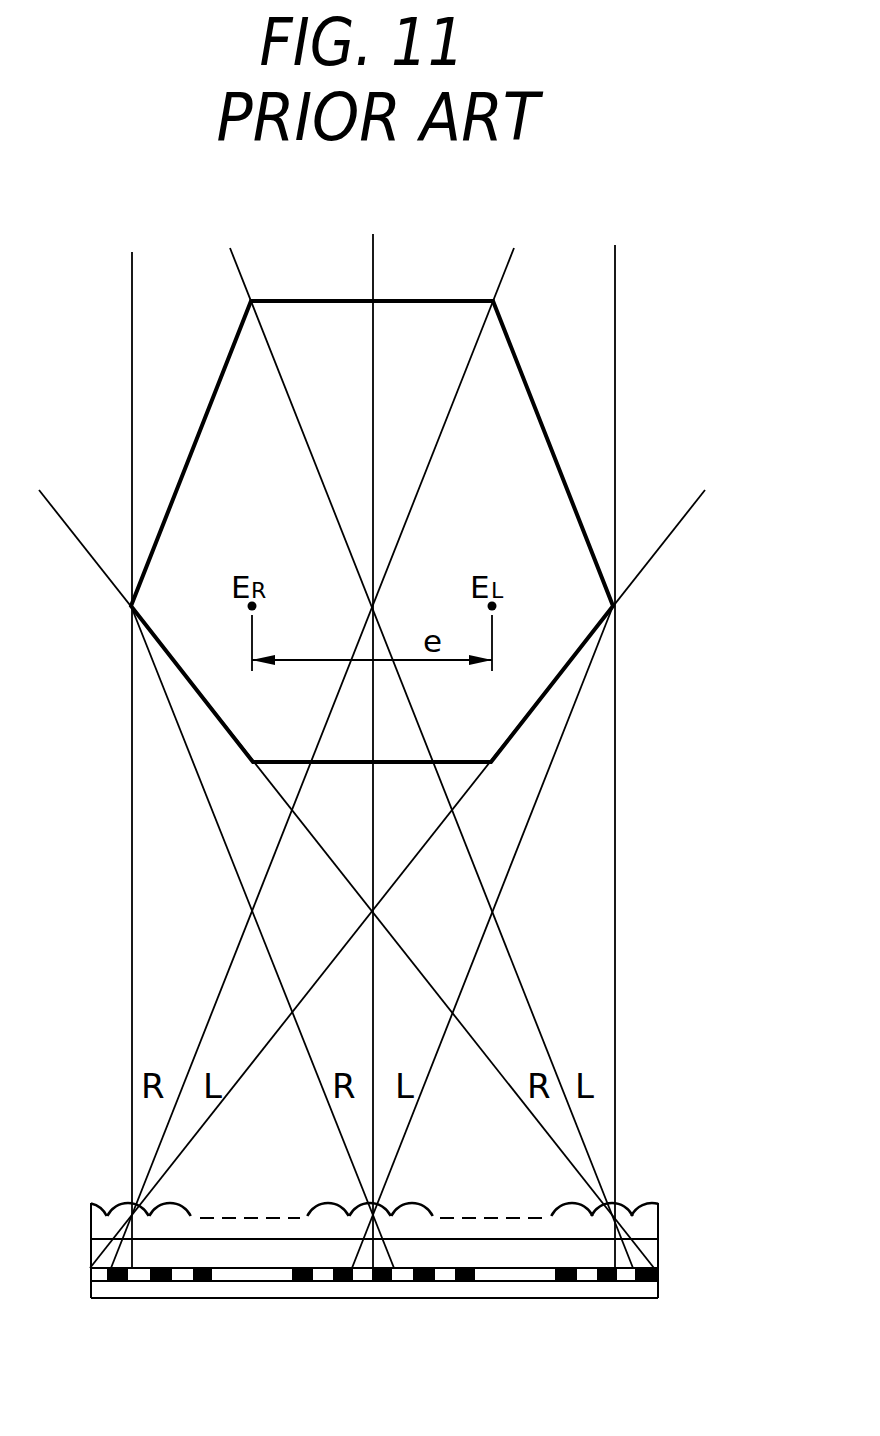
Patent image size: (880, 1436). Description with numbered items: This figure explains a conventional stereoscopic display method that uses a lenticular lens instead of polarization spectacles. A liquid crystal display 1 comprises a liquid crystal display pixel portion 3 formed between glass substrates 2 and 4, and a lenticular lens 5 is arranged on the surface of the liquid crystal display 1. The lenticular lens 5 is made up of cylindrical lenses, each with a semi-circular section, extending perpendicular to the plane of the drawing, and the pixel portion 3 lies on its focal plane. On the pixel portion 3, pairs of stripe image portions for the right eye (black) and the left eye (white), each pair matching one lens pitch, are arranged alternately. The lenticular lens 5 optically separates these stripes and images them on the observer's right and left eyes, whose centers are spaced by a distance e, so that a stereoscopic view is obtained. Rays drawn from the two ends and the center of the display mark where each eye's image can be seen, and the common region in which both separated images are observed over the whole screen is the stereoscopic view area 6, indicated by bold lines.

The liquid crystal display 1 is at (733, 1183).
The glass substrate 2 is at (652, 1249).
The liquid crystal display pixel portion 3 is at (655, 1274).
The glass substrate 4 is at (655, 1289).
The lenticular lens 5 is at (648, 1215).
The stereoscopic view area 6 is at (539, 407).